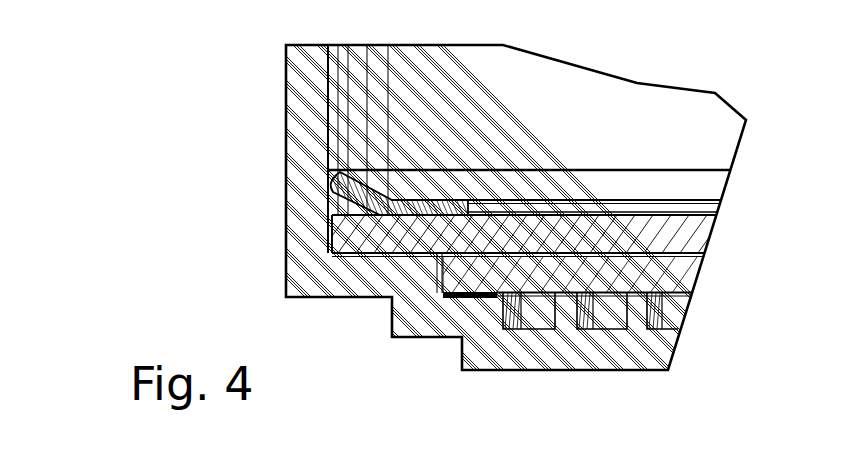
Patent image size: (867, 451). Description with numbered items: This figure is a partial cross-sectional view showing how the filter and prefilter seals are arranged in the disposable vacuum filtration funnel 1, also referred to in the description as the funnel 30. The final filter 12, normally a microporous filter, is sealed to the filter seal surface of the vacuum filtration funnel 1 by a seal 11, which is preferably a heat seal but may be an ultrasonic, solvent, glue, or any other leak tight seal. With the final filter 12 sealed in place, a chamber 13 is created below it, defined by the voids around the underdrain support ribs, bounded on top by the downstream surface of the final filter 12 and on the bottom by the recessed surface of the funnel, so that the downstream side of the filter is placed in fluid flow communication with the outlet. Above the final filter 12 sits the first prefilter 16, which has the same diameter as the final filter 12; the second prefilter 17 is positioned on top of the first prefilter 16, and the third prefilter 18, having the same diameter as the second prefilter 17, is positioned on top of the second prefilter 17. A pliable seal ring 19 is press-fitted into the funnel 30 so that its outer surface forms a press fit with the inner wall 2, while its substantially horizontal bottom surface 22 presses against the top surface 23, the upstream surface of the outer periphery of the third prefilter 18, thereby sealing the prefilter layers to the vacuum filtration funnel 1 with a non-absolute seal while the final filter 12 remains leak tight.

The vacuum filtration funnel 1 is at (294, 90).
The inner wall 2 is at (328, 115).
The seal 11 is at (450, 298).
The final filter 12 is at (680, 297).
The chamber 13 is at (543, 300).
The first prefilter 16 is at (680, 275).
The second prefilter 17 is at (698, 252).
The third prefilter 18 is at (698, 233).
The seal ring 19 is at (345, 190).
The bottom surface 22 is at (433, 222).
The top surface 23 is at (651, 213).
The funnel 30 is at (170, 136).